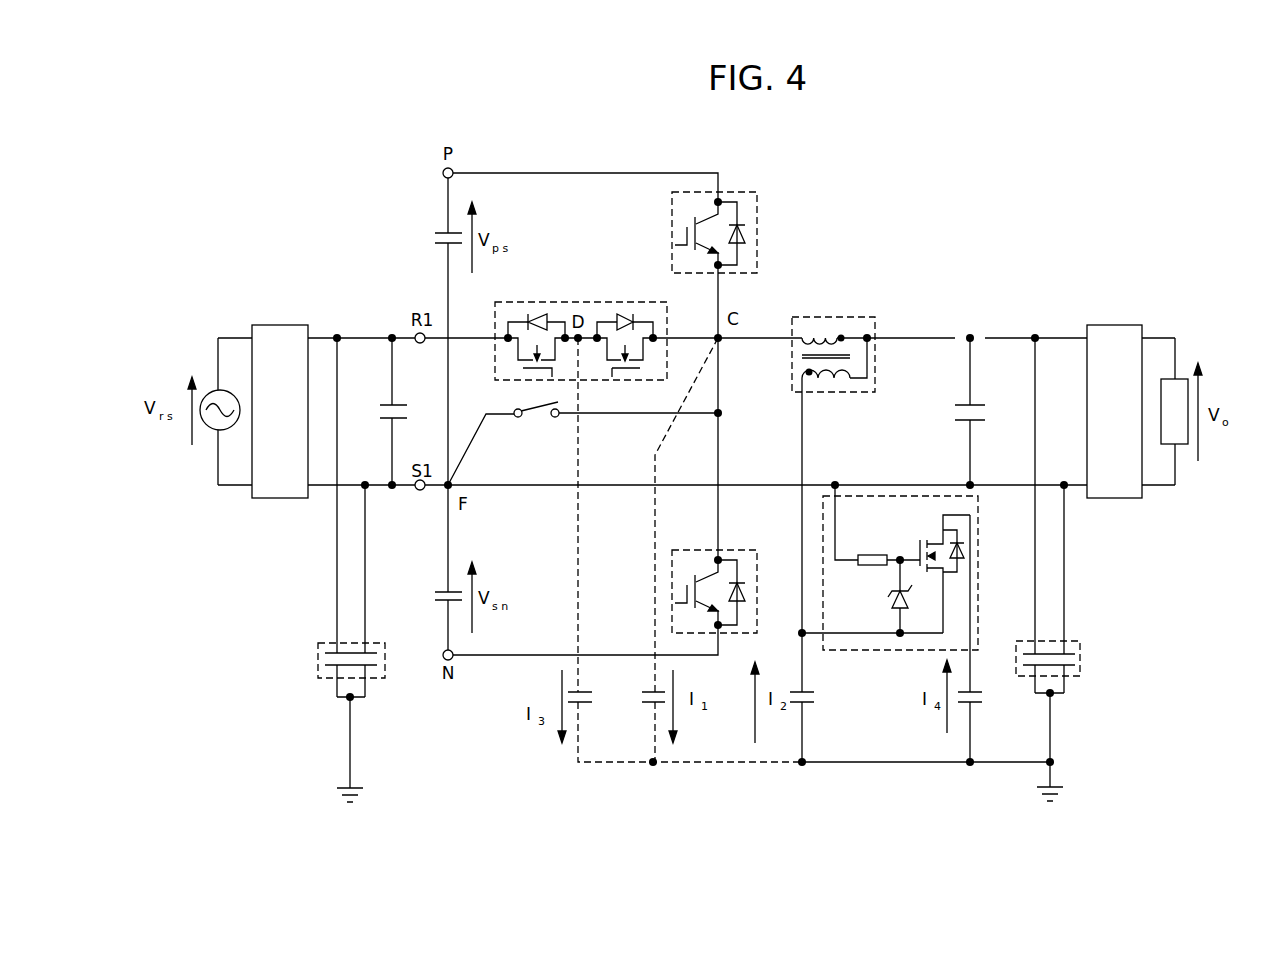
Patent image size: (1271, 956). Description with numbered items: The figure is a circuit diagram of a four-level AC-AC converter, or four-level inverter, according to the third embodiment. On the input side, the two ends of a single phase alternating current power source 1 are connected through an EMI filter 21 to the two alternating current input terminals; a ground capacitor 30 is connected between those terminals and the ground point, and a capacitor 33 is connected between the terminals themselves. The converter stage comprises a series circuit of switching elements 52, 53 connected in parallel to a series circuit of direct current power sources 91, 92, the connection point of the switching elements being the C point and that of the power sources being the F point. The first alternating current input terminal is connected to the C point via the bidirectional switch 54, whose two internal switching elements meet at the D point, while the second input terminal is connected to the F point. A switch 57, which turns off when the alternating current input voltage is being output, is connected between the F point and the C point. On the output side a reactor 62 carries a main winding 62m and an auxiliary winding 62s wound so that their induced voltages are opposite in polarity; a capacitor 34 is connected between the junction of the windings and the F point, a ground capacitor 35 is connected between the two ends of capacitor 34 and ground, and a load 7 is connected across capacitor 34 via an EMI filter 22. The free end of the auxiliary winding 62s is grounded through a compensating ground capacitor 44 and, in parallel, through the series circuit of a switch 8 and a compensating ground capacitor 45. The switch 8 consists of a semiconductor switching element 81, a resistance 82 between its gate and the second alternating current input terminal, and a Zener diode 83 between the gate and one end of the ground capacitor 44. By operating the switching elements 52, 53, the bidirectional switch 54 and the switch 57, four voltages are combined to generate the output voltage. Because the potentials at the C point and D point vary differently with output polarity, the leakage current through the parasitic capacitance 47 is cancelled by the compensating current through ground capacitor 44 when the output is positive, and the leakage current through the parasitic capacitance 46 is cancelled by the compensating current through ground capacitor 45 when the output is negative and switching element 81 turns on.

The single phase alternating current power source 1 is at (210, 393).
The load 7 is at (1180, 386).
The switch 8 is at (890, 591).
The EMI filter 21 is at (270, 332).
The EMI filter 22 is at (1110, 326).
The ground capacitor 30 is at (325, 683).
The capacitor 33 is at (380, 403).
The capacitor 34 is at (987, 405).
The ground capacitor 35 is at (1082, 678).
The compensating ground capacitor 44 is at (808, 704).
The compensating ground capacitor 45 is at (958, 710).
The parasitic capacitance 46 is at (575, 713).
The parasitic capacitance 47 is at (647, 712).
The switching element 52 is at (757, 193).
The switching element 53 is at (746, 550).
The bidirectional switch 54 is at (556, 302).
The switch 57 is at (533, 399).
The reactor 62 is at (840, 448).
The main winding 62m is at (825, 335).
The auxiliary winding 62s is at (825, 380).
The semiconductor switching element 81 is at (919, 543).
The resistance 82 is at (870, 555).
The Zener diode 83 is at (886, 597).
The direct current power source 91 is at (437, 231).
The direct current power source 92 is at (443, 589).